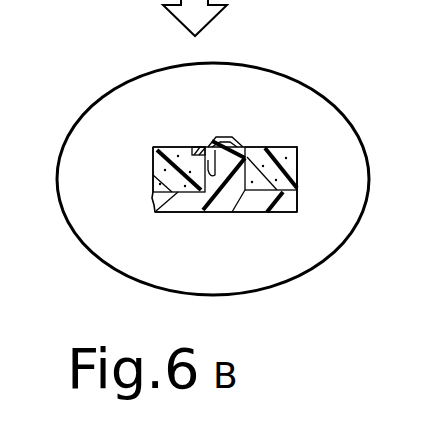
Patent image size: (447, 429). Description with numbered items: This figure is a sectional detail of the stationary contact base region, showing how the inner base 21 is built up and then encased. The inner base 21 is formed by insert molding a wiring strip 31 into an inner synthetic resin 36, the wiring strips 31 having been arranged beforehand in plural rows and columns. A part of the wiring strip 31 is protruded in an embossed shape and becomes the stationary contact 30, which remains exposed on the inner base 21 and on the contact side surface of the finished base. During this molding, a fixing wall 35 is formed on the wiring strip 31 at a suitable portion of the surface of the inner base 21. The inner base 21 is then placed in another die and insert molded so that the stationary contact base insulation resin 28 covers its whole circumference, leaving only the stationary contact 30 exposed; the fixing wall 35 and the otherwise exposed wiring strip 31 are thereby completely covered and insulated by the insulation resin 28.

The inner base 21 is at (150, 153).
The stationary contact base insulation resin 28 is at (223, 206).
The stationary contact 30 is at (222, 137).
The wiring strip 31 is at (258, 147).
The fixing wall 35 is at (209, 147).
The inner synthetic resin 36 is at (297, 165).